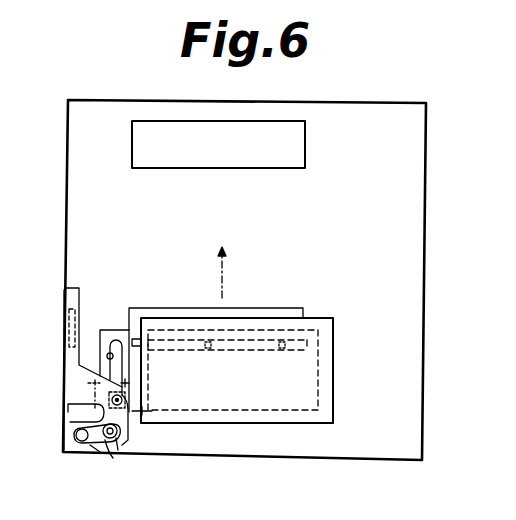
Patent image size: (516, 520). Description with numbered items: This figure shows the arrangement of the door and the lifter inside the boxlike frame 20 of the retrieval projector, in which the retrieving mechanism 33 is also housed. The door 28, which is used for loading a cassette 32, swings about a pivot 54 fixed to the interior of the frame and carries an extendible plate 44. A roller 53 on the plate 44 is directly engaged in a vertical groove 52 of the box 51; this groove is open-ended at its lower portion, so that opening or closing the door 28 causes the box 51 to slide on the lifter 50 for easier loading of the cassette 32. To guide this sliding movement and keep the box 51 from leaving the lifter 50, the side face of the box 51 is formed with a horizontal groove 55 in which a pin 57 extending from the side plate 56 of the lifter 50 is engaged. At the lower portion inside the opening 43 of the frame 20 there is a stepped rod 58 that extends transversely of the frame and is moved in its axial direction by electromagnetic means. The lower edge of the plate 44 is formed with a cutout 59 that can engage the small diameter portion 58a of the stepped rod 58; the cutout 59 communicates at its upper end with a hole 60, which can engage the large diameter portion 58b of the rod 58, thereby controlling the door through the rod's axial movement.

The frame 20 is at (426, 207).
The retrieving mechanism 33 is at (262, 121).
The opening 43 is at (66, 287).
The door 28 is at (64, 362).
The box 51 is at (111, 328).
The vertical groove 52 is at (111, 339).
The cassette 32 is at (180, 308).
The lifter 50 is at (246, 423).
The horizontal groove 55 is at (253, 344).
The pin 57 is at (282, 350).
The side plate 56 is at (333, 318).
The roller 53 is at (140, 381).
The plate 44 is at (136, 413).
The stepped rod 58 is at (67, 418).
The pivot 54 is at (76, 434).
The hole 60 is at (126, 441).
The small diameter portion 58a is at (93, 452).
The large diameter portion 58b is at (121, 452).
The cutout 59 is at (113, 455).